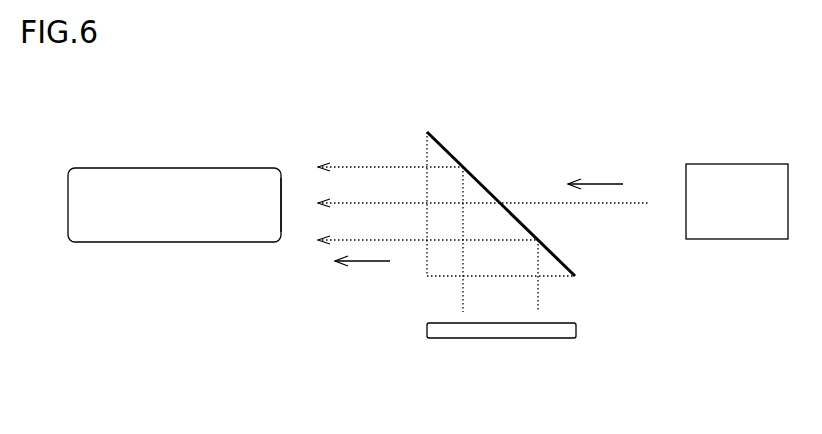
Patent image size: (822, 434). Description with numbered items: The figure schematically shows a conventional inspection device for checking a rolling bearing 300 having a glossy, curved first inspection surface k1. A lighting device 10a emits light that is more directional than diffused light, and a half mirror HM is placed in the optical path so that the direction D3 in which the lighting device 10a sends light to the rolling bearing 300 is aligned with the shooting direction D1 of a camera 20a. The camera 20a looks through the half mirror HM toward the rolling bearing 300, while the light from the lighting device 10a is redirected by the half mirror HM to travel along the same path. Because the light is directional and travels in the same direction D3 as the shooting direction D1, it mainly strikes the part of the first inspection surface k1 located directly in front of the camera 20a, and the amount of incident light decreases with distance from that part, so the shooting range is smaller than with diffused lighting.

The rolling bearing 300 is at (173, 168).
The first inspection surface k1 is at (281, 210).
The half mirror HM is at (455, 152).
The camera 20a is at (760, 163).
The lighting device 10a is at (520, 340).
The shooting direction D1 is at (595, 170).
The light emission direction D3 is at (362, 275).